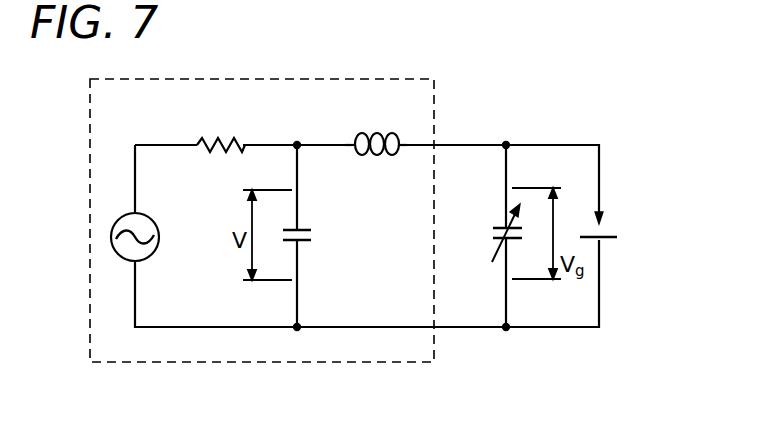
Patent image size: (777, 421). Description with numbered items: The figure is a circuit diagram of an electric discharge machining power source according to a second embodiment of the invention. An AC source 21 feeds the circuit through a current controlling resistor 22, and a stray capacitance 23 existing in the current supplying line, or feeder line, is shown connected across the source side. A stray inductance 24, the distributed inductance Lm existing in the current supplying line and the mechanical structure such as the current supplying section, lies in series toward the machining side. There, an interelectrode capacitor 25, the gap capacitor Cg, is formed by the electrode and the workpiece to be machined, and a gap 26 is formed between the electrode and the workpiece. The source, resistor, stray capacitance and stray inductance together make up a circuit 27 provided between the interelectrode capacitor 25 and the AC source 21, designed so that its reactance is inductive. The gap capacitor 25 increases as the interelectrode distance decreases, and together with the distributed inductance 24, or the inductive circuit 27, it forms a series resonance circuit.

The AC source 21 is at (155, 251).
The current controlling resistor 22 is at (241, 150).
The stray capacitance 23 is at (305, 243).
The stray inductance 24 is at (388, 156).
The interelectrode capacitor 25 is at (496, 228).
The gap 26 is at (608, 234).
The circuit 27 is at (355, 78).